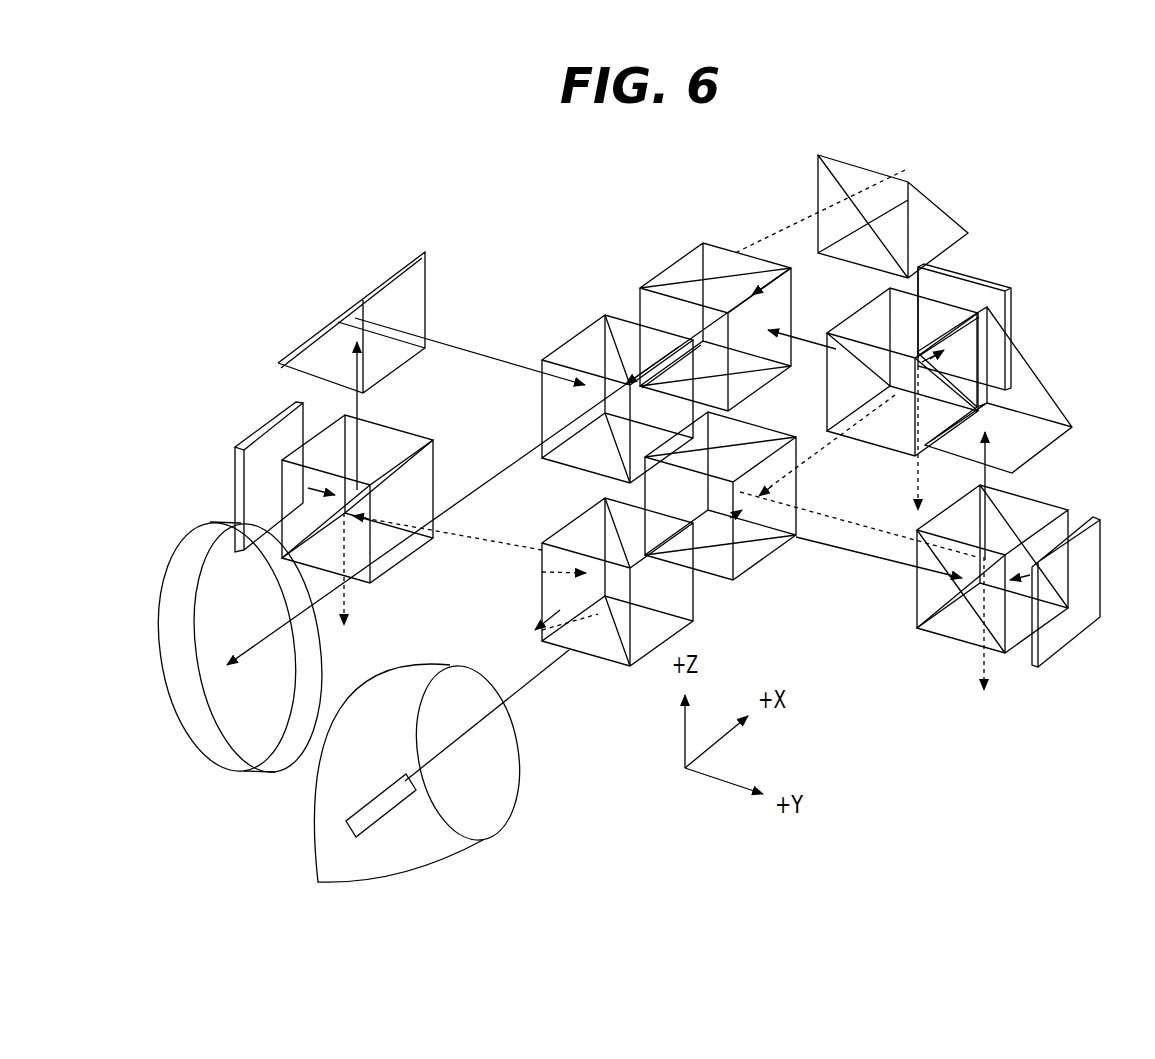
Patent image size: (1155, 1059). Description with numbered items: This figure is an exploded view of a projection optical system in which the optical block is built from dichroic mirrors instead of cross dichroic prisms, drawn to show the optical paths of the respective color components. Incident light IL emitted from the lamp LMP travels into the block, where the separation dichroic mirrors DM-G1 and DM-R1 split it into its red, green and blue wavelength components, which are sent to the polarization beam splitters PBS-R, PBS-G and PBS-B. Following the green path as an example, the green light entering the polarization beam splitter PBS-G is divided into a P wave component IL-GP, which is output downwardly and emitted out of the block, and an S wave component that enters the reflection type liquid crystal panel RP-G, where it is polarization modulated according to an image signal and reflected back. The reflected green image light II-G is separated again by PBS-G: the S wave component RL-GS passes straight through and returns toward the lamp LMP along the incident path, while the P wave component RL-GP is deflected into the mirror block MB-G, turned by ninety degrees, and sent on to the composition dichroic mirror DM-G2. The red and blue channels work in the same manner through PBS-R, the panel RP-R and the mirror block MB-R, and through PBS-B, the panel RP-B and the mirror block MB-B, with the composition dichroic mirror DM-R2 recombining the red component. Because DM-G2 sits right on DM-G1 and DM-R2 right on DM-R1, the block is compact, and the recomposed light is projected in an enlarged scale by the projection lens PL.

The projection lens PL is at (208, 770).
The lamp LMP is at (467, 853).
The incident light IL is at (522, 697).
The reflection type liquid crystal panel for G RP-G is at (250, 430).
The polarization beam splitter for G PBS-G is at (403, 430).
The mirror block for G MB-G is at (432, 272).
The P wave component of G incident light IL-GP is at (348, 607).
The green image light II-G is at (467, 548).
The P wave component of reflected G light RL-GP is at (483, 356).
The separation dichroic mirror for G DM-G1 is at (565, 523).
The S wave component of reflected G light RL-GS is at (577, 570).
The composition dichroic mirror for G DM-G2 is at (595, 315).
The separation dichroic mirror for R DM-R1 is at (767, 558).
The composition dichroic mirror for R DM-R2 is at (715, 248).
The mirror block for B MB-B is at (955, 250).
The reflection type liquid crystal panel for B RP-B is at (1013, 318).
The polarization beam splitter for B PBS-B is at (872, 443).
The mirror block for R MB-R is at (1052, 437).
The polarization beam splitter for R PBS-R is at (917, 605).
The reflection type liquid crystal panel for R RP-R is at (1070, 642).